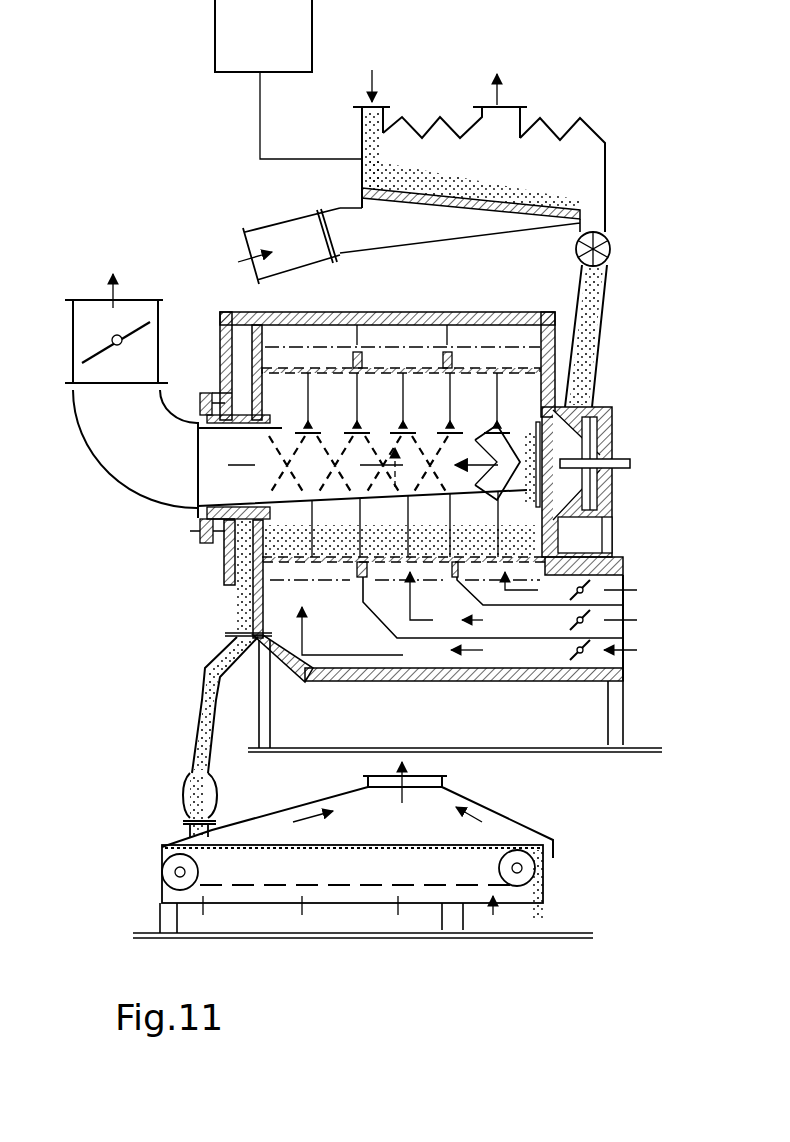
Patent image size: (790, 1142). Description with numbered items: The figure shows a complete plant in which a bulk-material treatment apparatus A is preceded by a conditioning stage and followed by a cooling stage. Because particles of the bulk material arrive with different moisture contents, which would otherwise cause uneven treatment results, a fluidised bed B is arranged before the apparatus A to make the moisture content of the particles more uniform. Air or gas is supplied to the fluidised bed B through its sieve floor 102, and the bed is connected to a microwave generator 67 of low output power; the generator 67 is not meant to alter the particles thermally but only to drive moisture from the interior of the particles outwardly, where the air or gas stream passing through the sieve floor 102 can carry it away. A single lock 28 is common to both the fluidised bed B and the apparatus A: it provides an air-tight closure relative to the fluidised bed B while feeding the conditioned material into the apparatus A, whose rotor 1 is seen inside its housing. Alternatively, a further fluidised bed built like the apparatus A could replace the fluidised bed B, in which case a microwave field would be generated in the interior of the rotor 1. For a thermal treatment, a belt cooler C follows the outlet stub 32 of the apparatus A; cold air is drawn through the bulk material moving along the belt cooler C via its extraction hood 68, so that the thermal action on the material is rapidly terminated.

The microwave generator 67 is at (272, 26).
The fluidised bed B is at (607, 150).
The sieve floor 102 is at (487, 216).
The lock 28 is at (612, 243).
The rotor 1 is at (430, 356).
The apparatus A is at (652, 584).
The outlet stub 32 is at (233, 613).
The belt cooler C is at (571, 862).
The extraction hood 68 is at (430, 772).